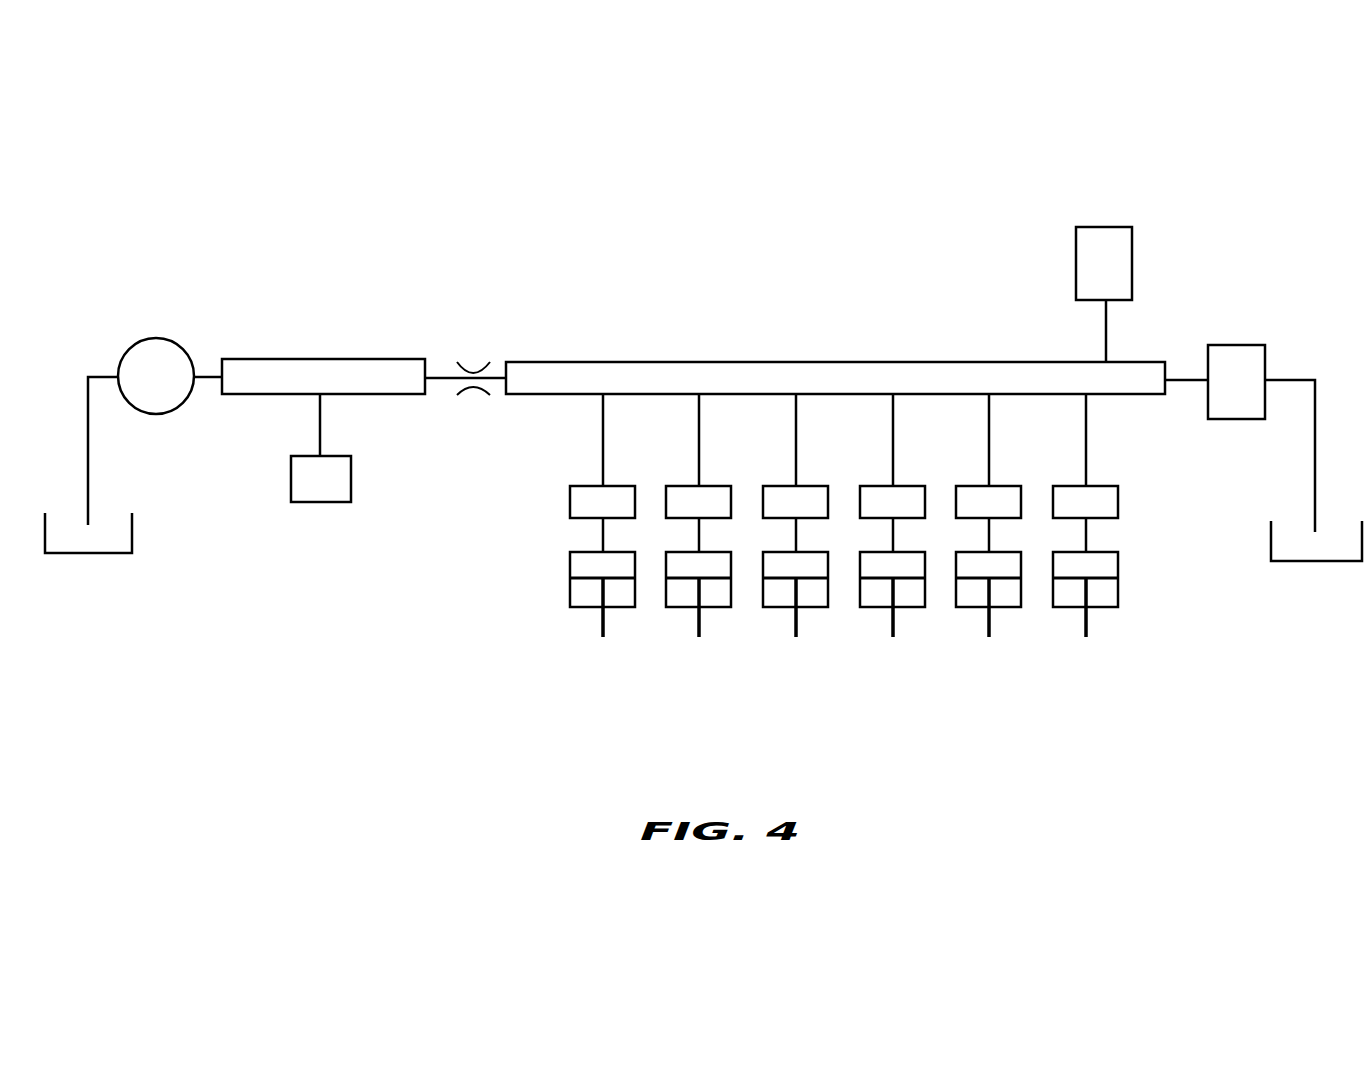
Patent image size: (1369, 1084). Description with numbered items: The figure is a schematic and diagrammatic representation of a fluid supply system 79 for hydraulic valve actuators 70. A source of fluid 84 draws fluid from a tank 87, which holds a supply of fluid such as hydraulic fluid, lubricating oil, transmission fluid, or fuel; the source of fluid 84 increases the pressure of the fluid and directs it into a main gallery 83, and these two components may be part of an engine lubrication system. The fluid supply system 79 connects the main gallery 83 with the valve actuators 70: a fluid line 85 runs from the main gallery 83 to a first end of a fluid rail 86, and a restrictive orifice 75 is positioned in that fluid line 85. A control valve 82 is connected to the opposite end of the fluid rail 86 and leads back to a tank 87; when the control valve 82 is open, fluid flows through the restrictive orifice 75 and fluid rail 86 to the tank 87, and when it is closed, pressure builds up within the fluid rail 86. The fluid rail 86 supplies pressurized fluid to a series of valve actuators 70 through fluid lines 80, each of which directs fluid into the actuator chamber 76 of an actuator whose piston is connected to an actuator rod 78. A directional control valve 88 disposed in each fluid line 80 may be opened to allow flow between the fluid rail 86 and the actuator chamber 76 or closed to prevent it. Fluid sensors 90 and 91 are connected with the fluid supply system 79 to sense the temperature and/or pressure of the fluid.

The valve actuator 70 is at (531, 576).
The restrictive orifice 75 is at (473, 388).
The actuator chamber 76 is at (576, 567).
The actuator rod 78 is at (597, 625).
The fluid supply system 79 is at (603, 270).
The fluid line 80 is at (600, 535).
The control valve 82 is at (1232, 345).
The main gallery 83 is at (303, 359).
The source of fluid 84 is at (148, 338).
The fluid line 85 is at (438, 374).
The fluid rail 86 is at (795, 362).
The tank 87 is at (88, 553).
The directional control valve 88 is at (575, 488).
The fluid sensor 90 is at (320, 502).
The fluid sensor 91 is at (1100, 227).